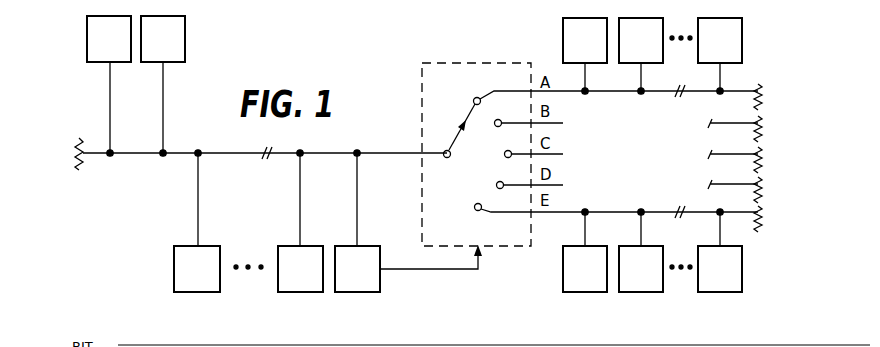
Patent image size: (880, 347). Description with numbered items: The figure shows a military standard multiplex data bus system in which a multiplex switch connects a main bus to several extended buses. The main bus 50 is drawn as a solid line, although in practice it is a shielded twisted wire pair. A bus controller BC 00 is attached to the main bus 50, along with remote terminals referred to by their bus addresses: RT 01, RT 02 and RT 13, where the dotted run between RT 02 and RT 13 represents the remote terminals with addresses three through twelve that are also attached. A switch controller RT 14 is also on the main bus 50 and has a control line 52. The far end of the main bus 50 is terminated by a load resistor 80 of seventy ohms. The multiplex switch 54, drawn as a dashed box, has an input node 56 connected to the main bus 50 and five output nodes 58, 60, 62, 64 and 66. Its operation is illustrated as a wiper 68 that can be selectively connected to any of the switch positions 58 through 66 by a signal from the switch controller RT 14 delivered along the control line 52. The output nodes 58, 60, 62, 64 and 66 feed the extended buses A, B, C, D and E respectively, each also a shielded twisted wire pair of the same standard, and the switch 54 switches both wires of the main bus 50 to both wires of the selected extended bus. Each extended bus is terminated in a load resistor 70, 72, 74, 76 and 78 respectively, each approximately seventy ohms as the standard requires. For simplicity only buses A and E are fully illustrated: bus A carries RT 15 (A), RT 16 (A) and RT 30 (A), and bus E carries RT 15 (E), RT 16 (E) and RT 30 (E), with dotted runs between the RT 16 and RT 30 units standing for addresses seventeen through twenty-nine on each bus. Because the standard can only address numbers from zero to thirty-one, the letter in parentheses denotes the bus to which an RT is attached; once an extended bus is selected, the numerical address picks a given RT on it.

The main bus 50 is at (121, 154).
The control line 52 is at (446, 270).
The multiplex switch 54 is at (430, 63).
The input node 56 is at (444, 158).
The output node 58 is at (473, 98).
The output node 60 is at (495, 126).
The output node 62 is at (504, 154).
The output node 64 is at (496, 184).
The output node 66 is at (475, 205).
The wiper 68 is at (459, 136).
The load resistor 70 is at (764, 96).
The load resistor 72 is at (764, 134).
The load resistor 74 is at (764, 162).
The load resistor 76 is at (764, 191).
The load resistor 78 is at (764, 220).
The load resistor 80 is at (76, 160).
The bus controller 00 is at (109, 76).
The remote terminal 01 is at (163, 76).
The remote terminal 02 is at (197, 233).
The remote terminal 13 is at (300, 233).
The switch controller 14 is at (357, 233).
The remote terminal 15 is at (585, 157).
The remote terminal 16 is at (641, 157).
The remote terminal 30 is at (720, 157).